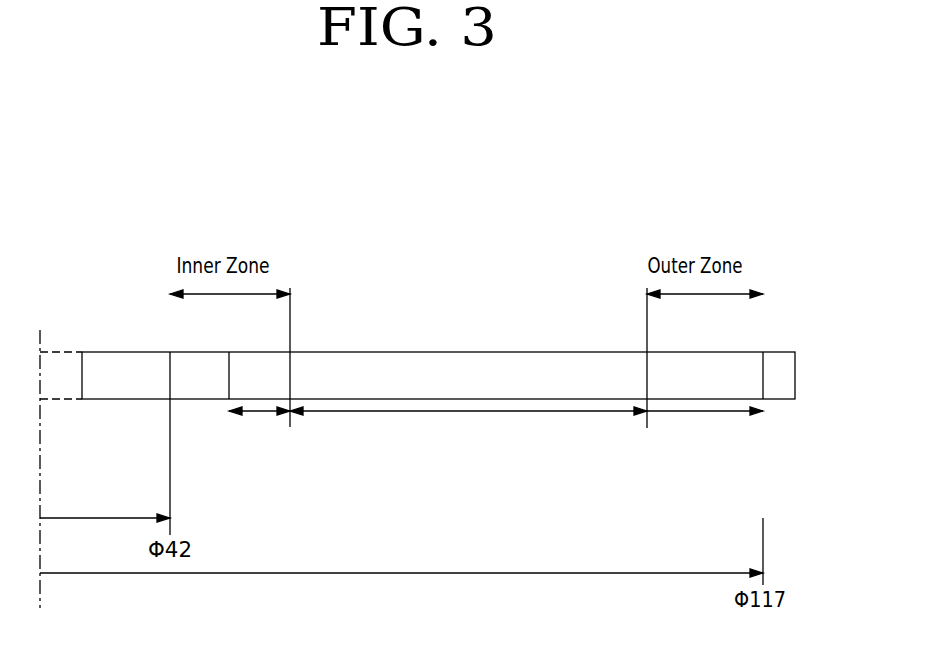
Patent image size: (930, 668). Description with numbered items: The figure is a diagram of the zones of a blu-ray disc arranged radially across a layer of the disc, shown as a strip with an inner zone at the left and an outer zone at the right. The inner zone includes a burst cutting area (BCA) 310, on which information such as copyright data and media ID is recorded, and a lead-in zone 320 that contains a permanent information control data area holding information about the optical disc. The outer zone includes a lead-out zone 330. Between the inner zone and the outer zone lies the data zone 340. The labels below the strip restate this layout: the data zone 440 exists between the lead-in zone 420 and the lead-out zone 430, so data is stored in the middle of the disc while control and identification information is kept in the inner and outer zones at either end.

The burst cutting area (BCA) 310 is at (176, 367).
The lead-in zone 320 is at (262, 405).
The lead-out zone 330 is at (708, 410).
The data zone 340 is at (540, 410).
The lead-in zone 420 is at (280, 507).
The lead-out zone 430 is at (695, 502).
The data zone 440 is at (448, 452).